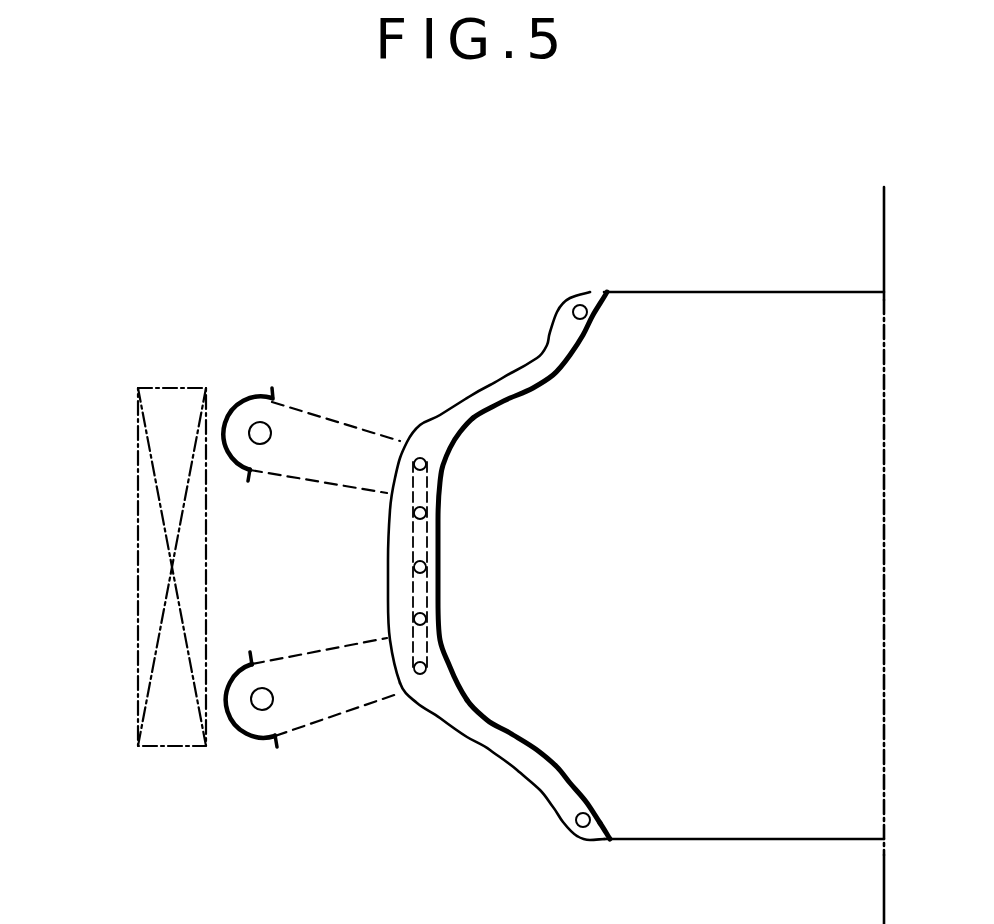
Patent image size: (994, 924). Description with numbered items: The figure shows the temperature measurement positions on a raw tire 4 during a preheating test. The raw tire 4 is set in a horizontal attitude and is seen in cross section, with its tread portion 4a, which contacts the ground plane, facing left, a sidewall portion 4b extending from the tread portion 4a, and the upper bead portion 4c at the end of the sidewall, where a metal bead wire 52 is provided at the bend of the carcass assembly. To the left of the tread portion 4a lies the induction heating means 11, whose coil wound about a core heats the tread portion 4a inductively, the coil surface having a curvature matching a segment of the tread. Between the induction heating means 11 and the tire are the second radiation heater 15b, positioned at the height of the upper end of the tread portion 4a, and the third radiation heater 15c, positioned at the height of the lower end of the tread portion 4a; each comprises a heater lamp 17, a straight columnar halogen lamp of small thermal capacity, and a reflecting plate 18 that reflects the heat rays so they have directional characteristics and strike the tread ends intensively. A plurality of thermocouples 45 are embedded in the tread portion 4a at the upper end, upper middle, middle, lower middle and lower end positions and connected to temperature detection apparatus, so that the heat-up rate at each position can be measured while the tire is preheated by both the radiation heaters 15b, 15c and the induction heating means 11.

The raw tire 4 is at (726, 259).
The tread portion 4a is at (375, 578).
The sidewall portion 4b is at (465, 756).
The upper bead portion 4c is at (559, 278).
The induction heating means 11 is at (133, 632).
The second radiation heater 15b is at (240, 376).
The third radiation heater 15c is at (225, 760).
The heater lamp 17 is at (262, 432).
The reflecting plate 18 is at (258, 400).
The thermocouples 45 is at (426, 513).
The metal bead wire 52 is at (589, 313).